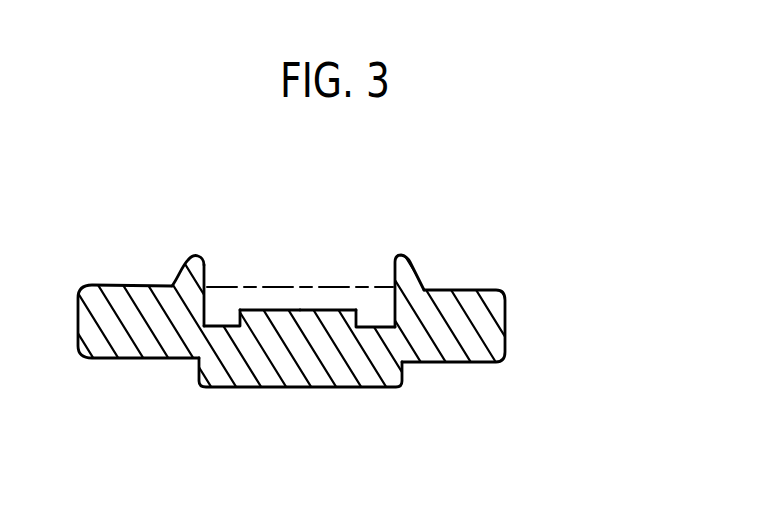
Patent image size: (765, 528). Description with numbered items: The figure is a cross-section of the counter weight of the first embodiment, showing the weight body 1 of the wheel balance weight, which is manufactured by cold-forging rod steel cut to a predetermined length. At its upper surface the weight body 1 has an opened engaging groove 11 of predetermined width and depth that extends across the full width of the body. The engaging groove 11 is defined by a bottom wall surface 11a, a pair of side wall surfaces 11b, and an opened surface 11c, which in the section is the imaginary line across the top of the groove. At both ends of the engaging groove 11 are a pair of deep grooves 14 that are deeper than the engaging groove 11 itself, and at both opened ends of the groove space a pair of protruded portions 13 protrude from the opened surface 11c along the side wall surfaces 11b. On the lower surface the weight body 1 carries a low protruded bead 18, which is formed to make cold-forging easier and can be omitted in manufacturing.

The weight body 1 is at (487, 304).
The engaging groove 11 is at (262, 302).
The bottom wall surface 11a is at (280, 303).
The side wall surfaces 11b is at (208, 256).
The opened surface 11c is at (312, 287).
The protruded portions 13 is at (196, 270).
The deep grooves 14 is at (221, 317).
The protruded bead 18 is at (320, 388).